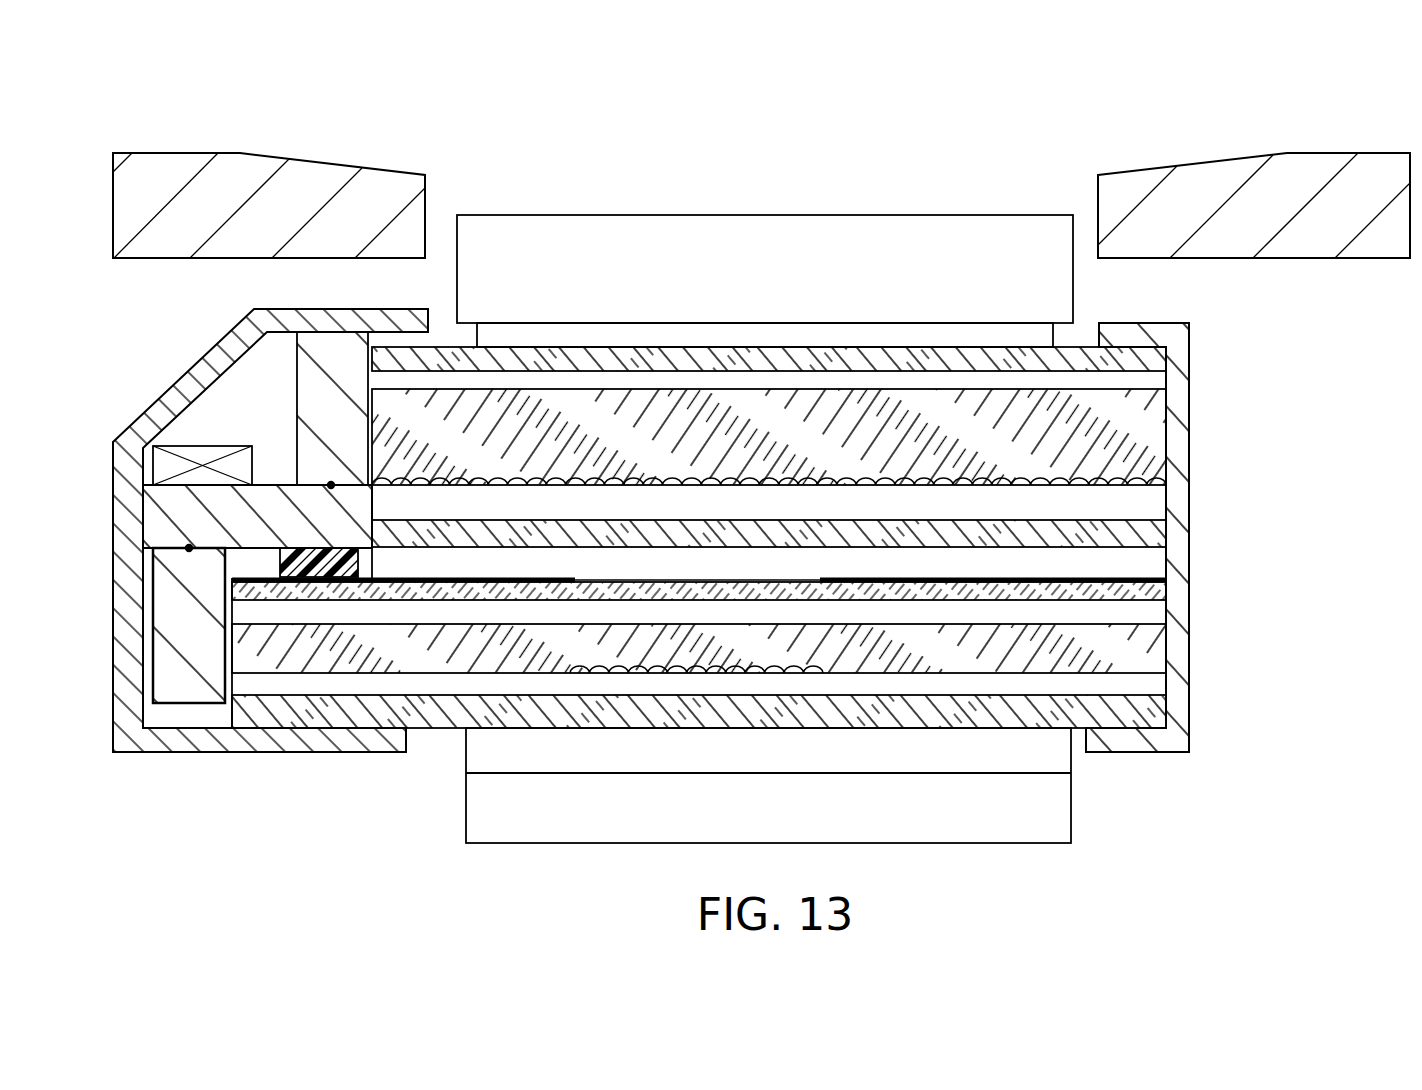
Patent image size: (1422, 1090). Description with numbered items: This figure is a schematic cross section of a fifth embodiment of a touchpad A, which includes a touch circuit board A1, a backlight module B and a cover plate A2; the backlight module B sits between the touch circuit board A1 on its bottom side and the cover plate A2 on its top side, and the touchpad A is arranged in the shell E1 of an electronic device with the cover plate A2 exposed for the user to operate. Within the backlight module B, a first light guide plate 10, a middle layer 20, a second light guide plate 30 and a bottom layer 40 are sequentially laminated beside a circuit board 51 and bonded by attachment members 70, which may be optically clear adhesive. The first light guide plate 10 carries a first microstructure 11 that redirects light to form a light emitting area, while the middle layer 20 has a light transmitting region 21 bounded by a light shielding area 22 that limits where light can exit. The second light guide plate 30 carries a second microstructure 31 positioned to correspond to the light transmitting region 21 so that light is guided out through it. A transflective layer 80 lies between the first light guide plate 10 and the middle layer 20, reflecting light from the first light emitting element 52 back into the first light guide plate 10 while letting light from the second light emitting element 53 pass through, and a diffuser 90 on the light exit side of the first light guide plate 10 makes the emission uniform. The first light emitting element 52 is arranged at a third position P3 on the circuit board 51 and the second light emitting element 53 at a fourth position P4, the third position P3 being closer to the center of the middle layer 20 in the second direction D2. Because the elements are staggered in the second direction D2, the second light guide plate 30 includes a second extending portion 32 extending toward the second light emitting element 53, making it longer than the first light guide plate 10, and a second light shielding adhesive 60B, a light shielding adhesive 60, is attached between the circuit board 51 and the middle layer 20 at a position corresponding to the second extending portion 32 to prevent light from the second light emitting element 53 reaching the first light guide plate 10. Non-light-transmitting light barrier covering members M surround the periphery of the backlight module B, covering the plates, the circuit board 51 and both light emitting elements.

The first light guide plate 10 is at (834, 628).
The first microstructure 11 is at (557, 487).
The middle layer 20 is at (785, 576).
The light transmitting region 21 is at (820, 580).
The light shielding area 22 is at (1010, 584).
The second light guide plate 30 is at (764, 750).
The second microstructure 31 is at (637, 673).
The second extending portion 32 is at (282, 625).
The bottom layer 40 is at (1082, 712).
The circuit board 51 is at (178, 527).
The first light emitting element 52 is at (303, 457).
The second light emitting element 53 is at (165, 613).
The light shielding adhesive 60 is at (335, 668).
The second light shielding adhesive 60B is at (320, 578).
The attachment member 70 is at (1035, 340).
The transflective layer 80 is at (1150, 532).
The diffuser 90 is at (1143, 363).
The touchpad A is at (550, 42).
The touch circuit board A1 is at (1020, 818).
The cover plate A2 is at (928, 233).
The backlight module B is at (452, 737).
The second direction D2 is at (1262, 855).
The shell E1 is at (230, 182).
The light barrier covering member M is at (192, 738).
The third position P3 is at (331, 485).
The fourth position P4 is at (189, 550).